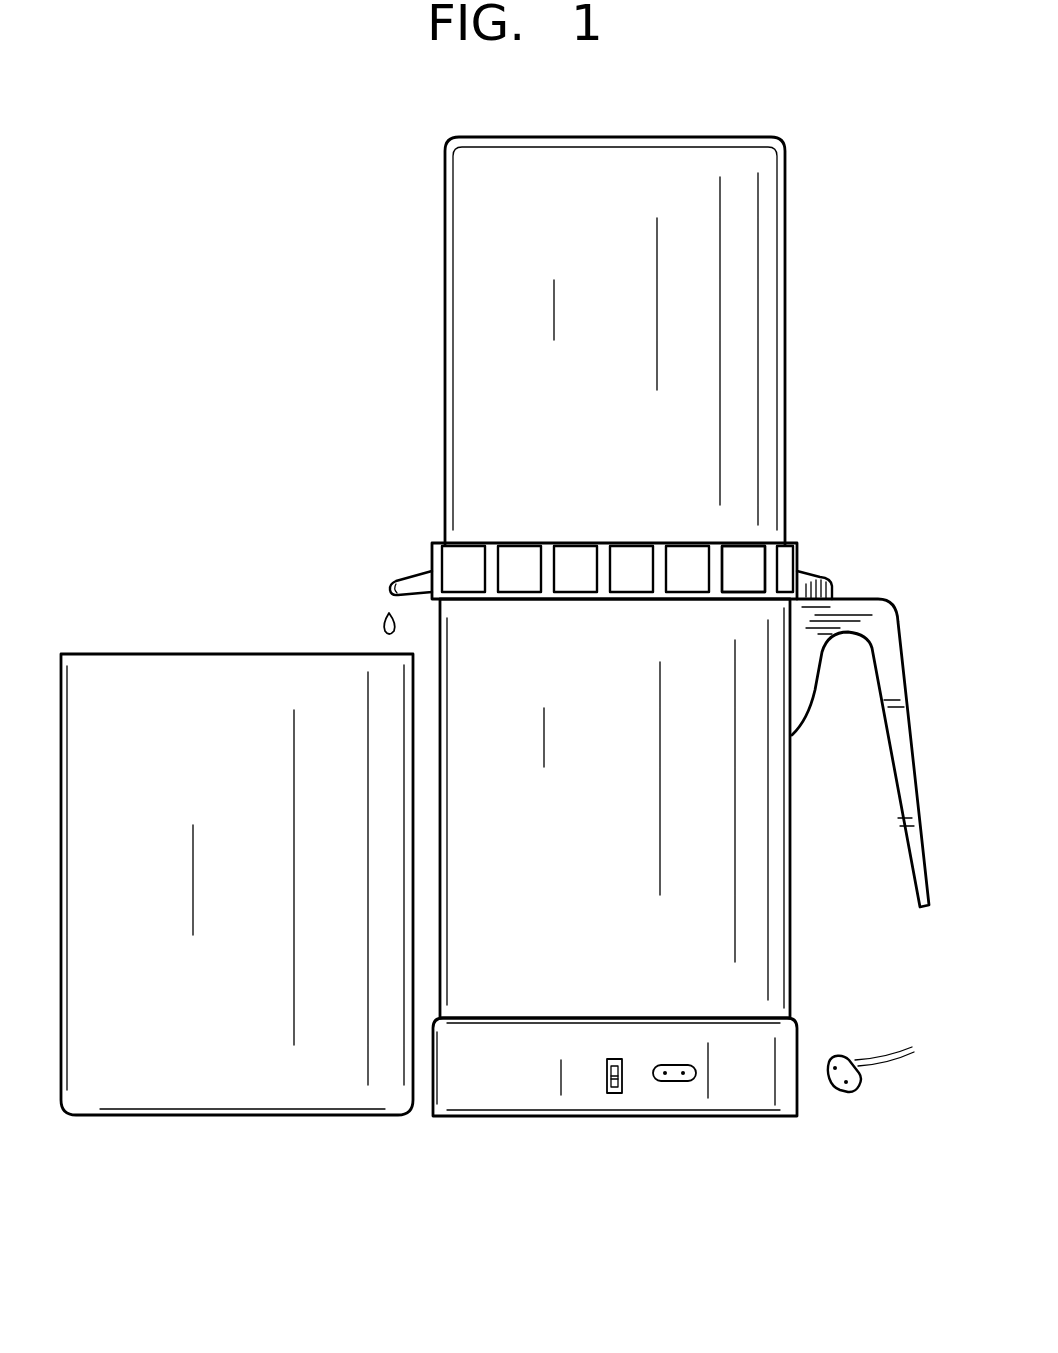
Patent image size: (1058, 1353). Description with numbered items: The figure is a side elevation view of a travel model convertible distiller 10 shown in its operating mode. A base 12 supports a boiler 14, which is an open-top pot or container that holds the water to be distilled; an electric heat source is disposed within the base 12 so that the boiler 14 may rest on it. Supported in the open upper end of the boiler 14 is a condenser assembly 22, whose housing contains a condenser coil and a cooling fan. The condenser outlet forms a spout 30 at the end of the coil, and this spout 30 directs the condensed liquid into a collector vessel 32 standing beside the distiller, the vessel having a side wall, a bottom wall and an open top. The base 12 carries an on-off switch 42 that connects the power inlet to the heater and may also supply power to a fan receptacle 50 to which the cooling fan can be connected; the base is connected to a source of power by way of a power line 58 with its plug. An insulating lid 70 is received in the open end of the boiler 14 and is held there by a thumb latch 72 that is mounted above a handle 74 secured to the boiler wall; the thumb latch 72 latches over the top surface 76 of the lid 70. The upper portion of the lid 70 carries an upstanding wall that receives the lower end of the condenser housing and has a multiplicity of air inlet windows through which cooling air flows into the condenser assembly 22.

The travel model convertible distiller 10 is at (277, 320).
The base 12 is at (740, 1104).
The boiler 14 is at (748, 940).
The condenser assembly 22 is at (788, 318).
The spout 30 is at (403, 575).
The collector vessel 32 is at (297, 1124).
The on-off switch 42 is at (617, 1095).
The fan receptacle 50 is at (680, 1082).
The power line 58 is at (893, 1063).
The insulating lid 70 is at (598, 557).
The thumb latch 72 is at (803, 575).
The handle 74 is at (883, 618).
The top surface 76 is at (742, 592).